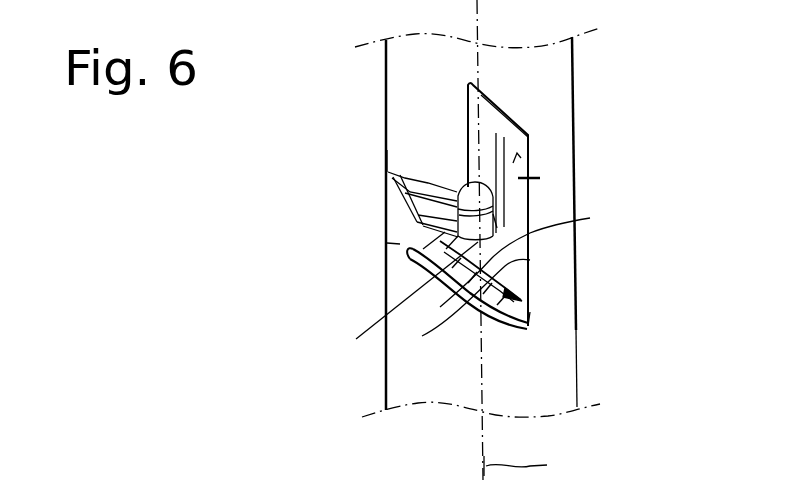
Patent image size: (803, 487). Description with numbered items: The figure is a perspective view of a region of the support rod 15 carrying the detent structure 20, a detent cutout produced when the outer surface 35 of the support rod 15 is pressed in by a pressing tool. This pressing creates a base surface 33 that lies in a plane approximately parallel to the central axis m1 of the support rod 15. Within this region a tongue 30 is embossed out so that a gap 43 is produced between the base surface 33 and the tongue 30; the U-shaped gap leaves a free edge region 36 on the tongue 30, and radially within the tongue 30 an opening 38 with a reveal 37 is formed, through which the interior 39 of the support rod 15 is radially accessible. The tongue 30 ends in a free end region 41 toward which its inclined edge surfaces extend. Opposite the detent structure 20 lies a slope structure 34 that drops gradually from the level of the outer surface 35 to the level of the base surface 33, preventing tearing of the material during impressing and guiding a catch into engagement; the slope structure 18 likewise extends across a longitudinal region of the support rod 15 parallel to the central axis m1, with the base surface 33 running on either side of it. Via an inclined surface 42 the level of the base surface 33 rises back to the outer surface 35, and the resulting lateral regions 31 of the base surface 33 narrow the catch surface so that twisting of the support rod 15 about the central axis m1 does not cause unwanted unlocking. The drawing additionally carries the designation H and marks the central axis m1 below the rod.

The support rod 15 is at (428, 97).
The slope structure 18 is at (491, 210).
The detent structure 20 is at (374, 196).
The tongue 30 is at (411, 272).
The lateral regions 31 is at (520, 178).
The base surface 33 is at (529, 152).
The slope structure 34 is at (388, 160).
The outer surface 35 is at (410, 357).
The free edge region 36 is at (530, 260).
The reveal 37 is at (457, 237).
The opening 38 is at (590, 218).
The interior 39 is at (440, 307).
The free end region 41 is at (403, 243).
The inclined surface 42 is at (508, 120).
The gap 43 is at (532, 309).
The height H is at (361, 308).
The central axis m1 is at (533, 466).